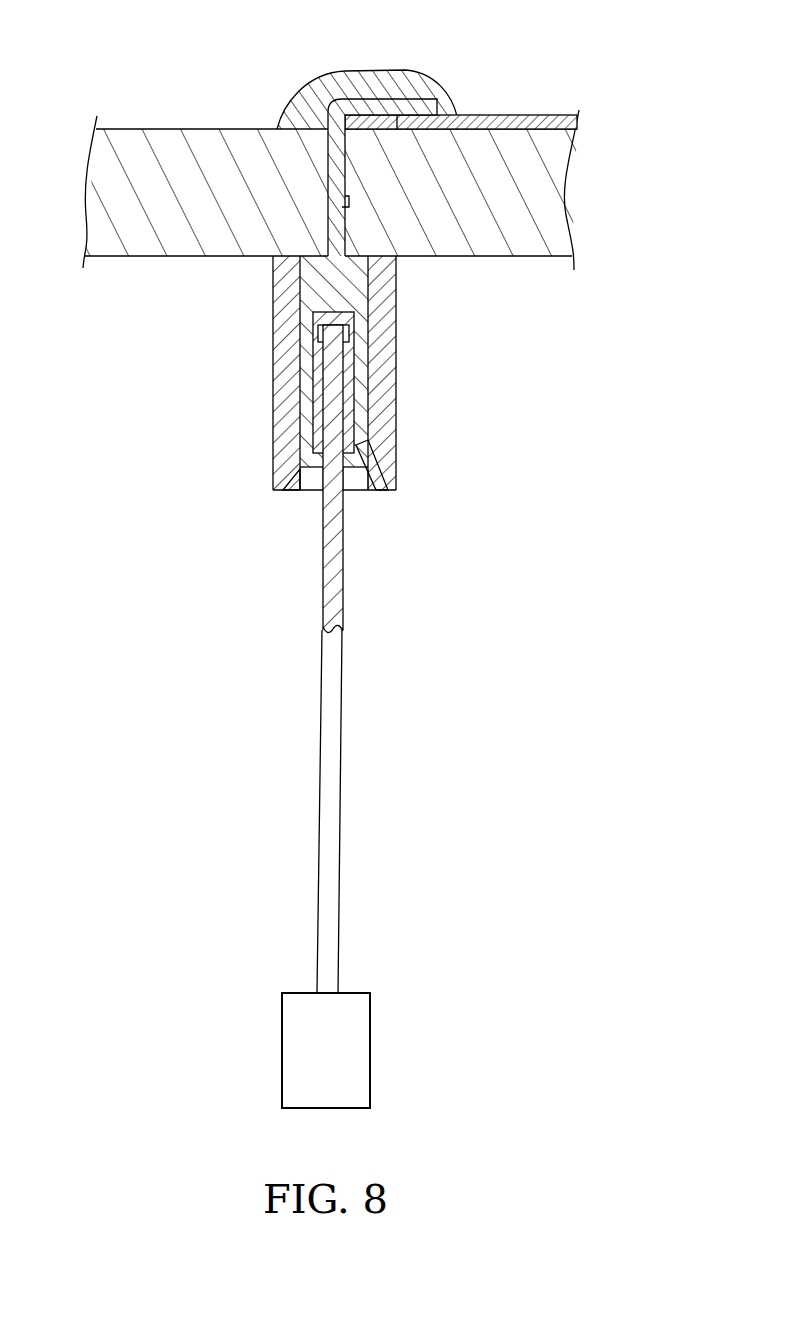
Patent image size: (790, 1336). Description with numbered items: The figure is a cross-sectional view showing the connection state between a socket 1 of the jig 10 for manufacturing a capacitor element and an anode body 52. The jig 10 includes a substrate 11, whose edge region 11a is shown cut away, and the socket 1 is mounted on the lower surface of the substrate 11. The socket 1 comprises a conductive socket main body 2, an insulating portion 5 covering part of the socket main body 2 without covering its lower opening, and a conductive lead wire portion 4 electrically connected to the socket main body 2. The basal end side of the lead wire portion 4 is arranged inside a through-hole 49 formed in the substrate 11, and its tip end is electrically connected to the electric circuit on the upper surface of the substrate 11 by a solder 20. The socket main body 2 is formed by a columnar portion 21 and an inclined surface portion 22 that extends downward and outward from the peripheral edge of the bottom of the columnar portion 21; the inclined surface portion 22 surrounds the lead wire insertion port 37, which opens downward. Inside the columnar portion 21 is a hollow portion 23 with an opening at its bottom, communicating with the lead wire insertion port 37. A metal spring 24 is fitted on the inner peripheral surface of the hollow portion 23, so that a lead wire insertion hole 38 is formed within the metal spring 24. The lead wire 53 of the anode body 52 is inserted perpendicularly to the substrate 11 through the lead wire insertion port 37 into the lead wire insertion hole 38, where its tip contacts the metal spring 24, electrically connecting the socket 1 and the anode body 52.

The socket 1 is at (329, 430).
The socket main body 2 is at (363, 388).
The lead wire portion 4 is at (378, 106).
The insulating portion 5 is at (284, 362).
The jig 10 is at (356, 176).
The substrate 11 is at (548, 208).
The board edge 11a is at (112, 258).
The solder 20 is at (415, 82).
The columnar portion 21 is at (327, 283).
The inclined surface portion 22 is at (296, 491).
The hollow portion 23 is at (318, 327).
The metal spring 24 is at (318, 434).
The lead wire insertion port 37 is at (305, 494).
The lead wire insertion hole 38 is at (323, 406).
The through-hole 49 is at (341, 206).
The anode body 52 is at (300, 1042).
The lead wire 53 is at (331, 843).